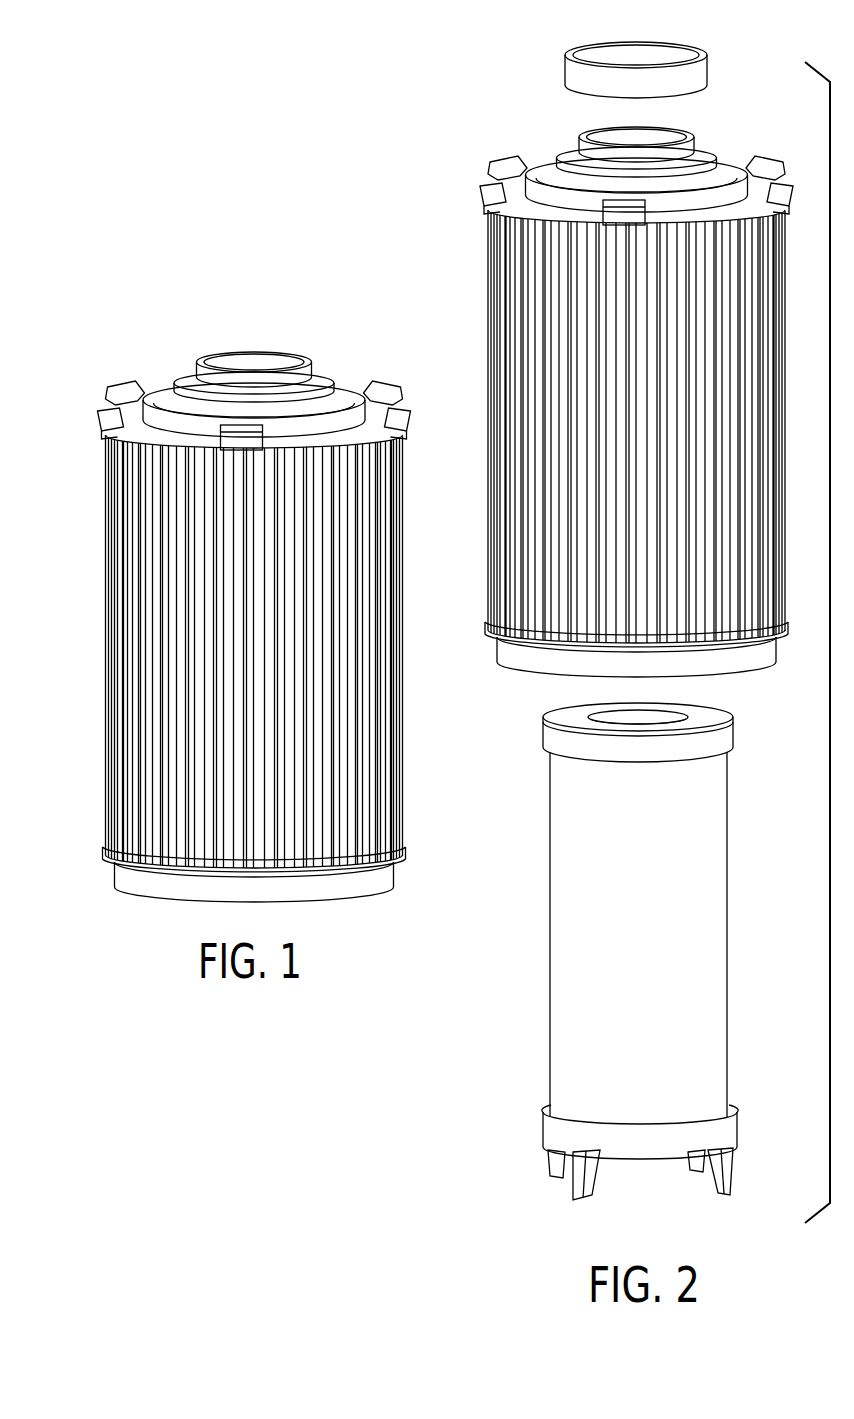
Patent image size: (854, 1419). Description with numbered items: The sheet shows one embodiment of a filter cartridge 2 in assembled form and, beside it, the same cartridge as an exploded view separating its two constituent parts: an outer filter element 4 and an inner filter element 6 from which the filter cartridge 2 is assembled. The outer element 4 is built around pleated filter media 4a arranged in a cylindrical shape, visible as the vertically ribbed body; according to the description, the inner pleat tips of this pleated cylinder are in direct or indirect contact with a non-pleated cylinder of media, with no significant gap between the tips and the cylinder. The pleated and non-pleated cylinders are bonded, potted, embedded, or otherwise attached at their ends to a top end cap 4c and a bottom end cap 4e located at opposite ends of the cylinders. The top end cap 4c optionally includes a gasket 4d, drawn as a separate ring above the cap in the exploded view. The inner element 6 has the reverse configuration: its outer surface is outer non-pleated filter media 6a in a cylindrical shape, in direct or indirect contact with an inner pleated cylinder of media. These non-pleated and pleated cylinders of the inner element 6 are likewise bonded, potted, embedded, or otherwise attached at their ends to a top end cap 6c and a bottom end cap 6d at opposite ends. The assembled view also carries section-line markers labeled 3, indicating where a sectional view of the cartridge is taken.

In FIG. 1, the filter cartridge 2 is at (88, 635).
In FIG. 1, the section line 3 is at (104, 410).
In FIG. 2, the outer filter element 4 is at (594, 409).
In FIG. 2, the pleated filter media 4a is at (488, 310).
In FIG. 2, the top end cap 4c is at (548, 160).
In FIG. 2, the gasket 4d is at (590, 44).
In FIG. 2, the bottom end cap 4e is at (497, 648).
In FIG. 2, the inner filter element 6 is at (582, 951).
In FIG. 2, the outer non-pleated filter media 6a is at (556, 930).
In FIG. 2, the top end cap 6c is at (543, 737).
In FIG. 2, the bottom end cap 6d is at (550, 1128).